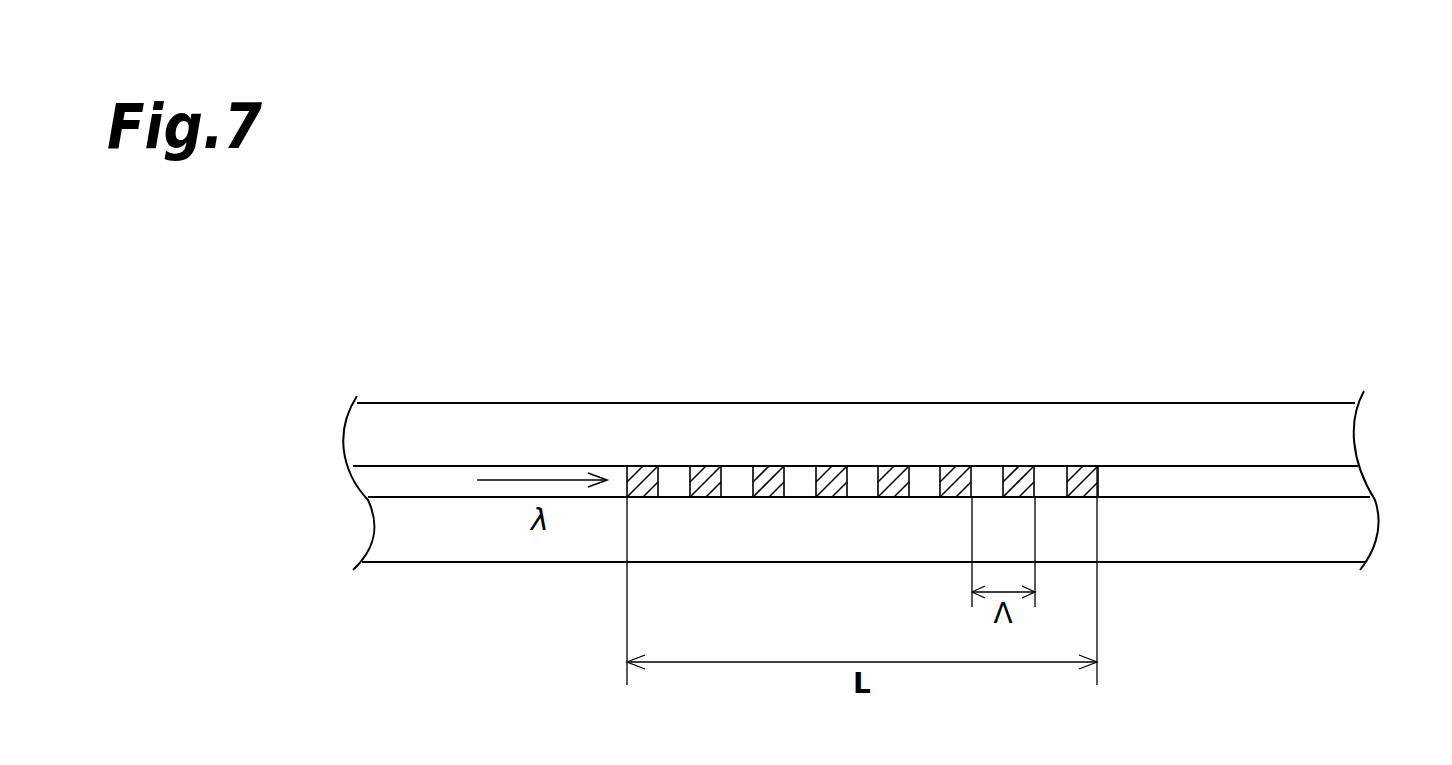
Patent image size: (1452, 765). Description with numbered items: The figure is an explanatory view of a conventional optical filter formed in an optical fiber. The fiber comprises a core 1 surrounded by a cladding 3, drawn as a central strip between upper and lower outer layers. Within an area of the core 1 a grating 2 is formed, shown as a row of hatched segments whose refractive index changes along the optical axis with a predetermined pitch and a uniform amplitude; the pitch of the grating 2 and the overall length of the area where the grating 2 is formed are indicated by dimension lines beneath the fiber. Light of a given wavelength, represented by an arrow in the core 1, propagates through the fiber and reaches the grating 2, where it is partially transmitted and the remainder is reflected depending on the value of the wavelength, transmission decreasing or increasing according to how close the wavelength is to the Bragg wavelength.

The core 1 is at (1362, 479).
The grating 2 is at (627, 451).
The cladding 3 is at (1347, 432).